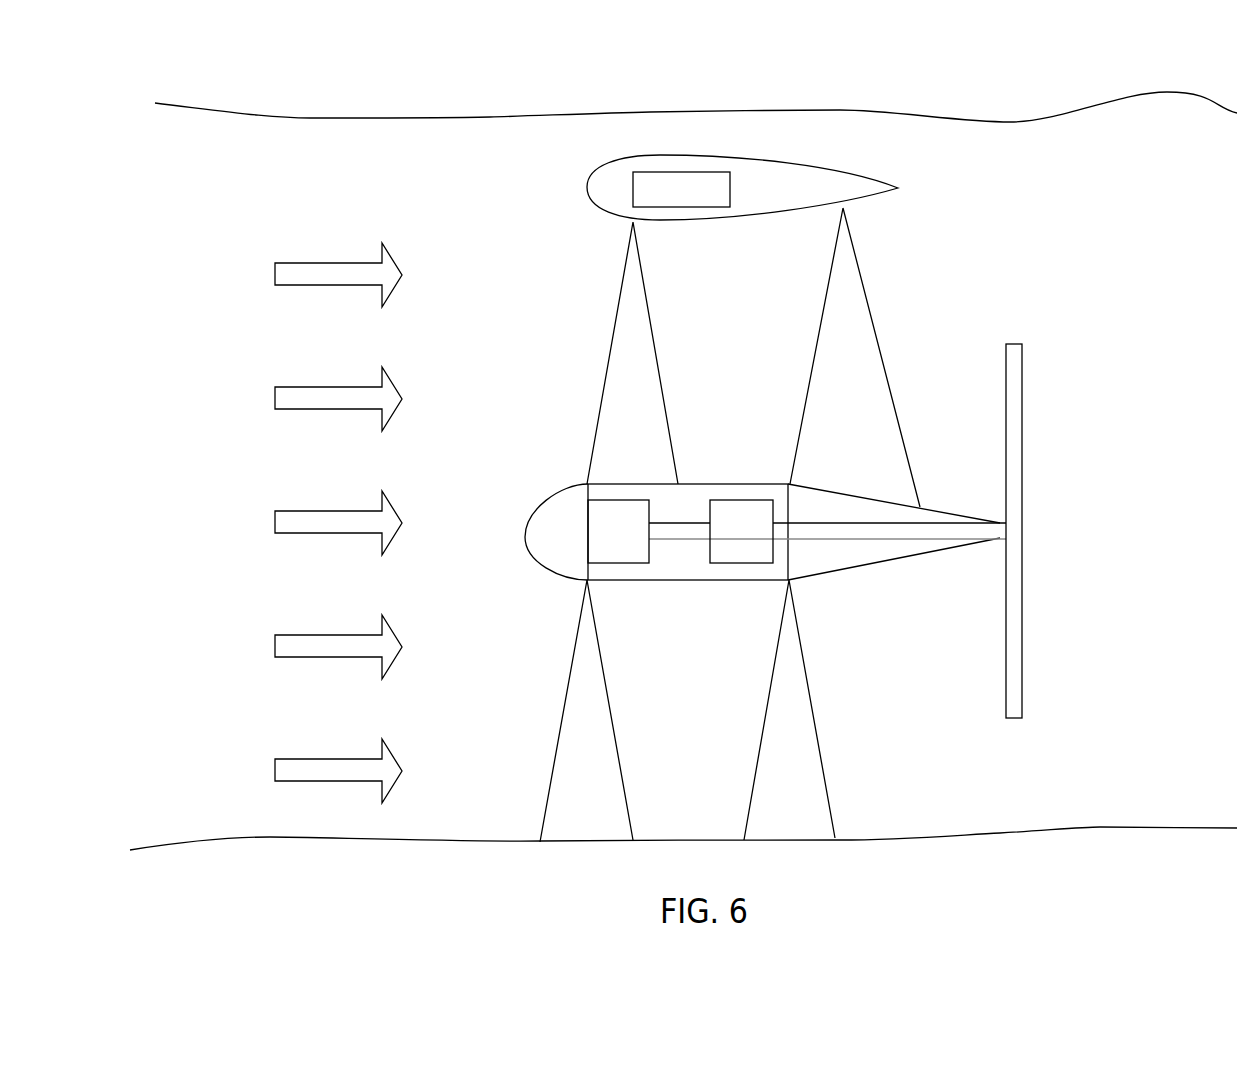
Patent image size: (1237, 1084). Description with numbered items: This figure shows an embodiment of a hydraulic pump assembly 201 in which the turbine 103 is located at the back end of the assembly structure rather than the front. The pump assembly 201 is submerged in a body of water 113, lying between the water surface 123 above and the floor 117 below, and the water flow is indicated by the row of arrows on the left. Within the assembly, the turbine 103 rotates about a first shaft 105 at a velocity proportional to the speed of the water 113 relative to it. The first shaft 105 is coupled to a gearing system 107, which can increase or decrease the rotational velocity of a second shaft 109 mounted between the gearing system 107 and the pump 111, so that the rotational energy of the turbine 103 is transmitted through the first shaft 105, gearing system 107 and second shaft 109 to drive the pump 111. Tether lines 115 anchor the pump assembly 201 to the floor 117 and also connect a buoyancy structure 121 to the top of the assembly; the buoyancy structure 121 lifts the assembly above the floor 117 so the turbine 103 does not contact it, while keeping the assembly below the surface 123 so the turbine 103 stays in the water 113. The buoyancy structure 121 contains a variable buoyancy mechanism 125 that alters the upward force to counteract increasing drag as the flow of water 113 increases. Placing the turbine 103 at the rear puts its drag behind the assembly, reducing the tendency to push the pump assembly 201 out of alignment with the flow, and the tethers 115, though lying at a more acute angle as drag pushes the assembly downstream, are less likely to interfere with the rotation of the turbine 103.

The turbine 103 is at (990, 438).
The first shaft 105 is at (840, 525).
The gearing system 107 is at (768, 552).
The second shaft 109 is at (665, 530).
The pump 111 is at (600, 546).
The water 113 is at (307, 133).
The tether lines 115 is at (655, 333).
The floor 117 is at (1098, 833).
The buoyancy structure 121 is at (812, 168).
The surface 123 is at (488, 120).
The variable buoyancy mechanism 125 is at (728, 200).
The pump assembly 201 is at (502, 483).